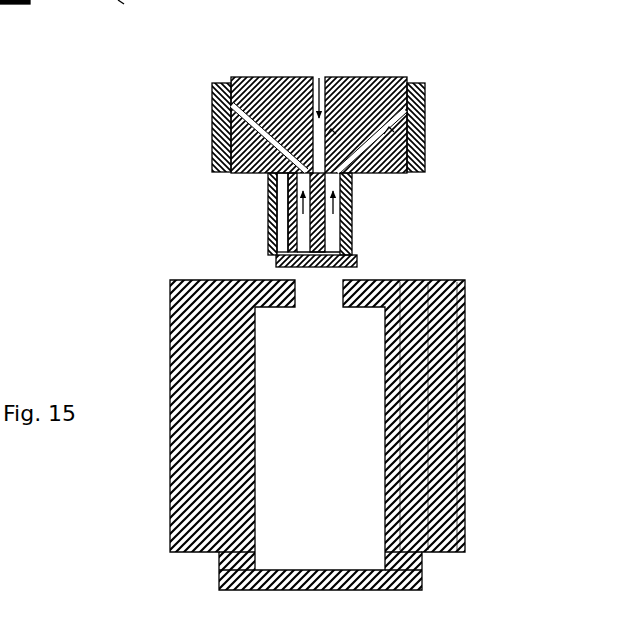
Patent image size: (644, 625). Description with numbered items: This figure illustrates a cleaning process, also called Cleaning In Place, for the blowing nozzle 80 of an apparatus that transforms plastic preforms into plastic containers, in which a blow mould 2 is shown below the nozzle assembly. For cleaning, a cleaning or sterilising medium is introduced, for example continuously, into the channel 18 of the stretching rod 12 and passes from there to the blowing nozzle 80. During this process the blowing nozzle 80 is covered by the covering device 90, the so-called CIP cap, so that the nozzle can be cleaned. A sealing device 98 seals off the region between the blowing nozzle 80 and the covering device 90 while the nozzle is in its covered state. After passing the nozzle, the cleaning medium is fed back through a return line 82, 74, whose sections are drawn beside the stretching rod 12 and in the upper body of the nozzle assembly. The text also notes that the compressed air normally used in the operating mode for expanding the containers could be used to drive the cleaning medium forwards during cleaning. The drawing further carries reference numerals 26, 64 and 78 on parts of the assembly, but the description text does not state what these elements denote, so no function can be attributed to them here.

The blow mould 2 is at (480, 359).
The stretching rod 12 is at (292, 78).
The channel 18 is at (347, 93).
The manifold plate 26 is at (34, 0).
The fastener 64 is at (122, 0).
The return line 74 is at (433, 88).
The diagonal passage 78 is at (245, 131).
The blowing nozzle 80 is at (367, 224).
The return line 82 is at (300, 222).
The covering device 90 is at (288, 256).
The sealing device 98 is at (352, 253).